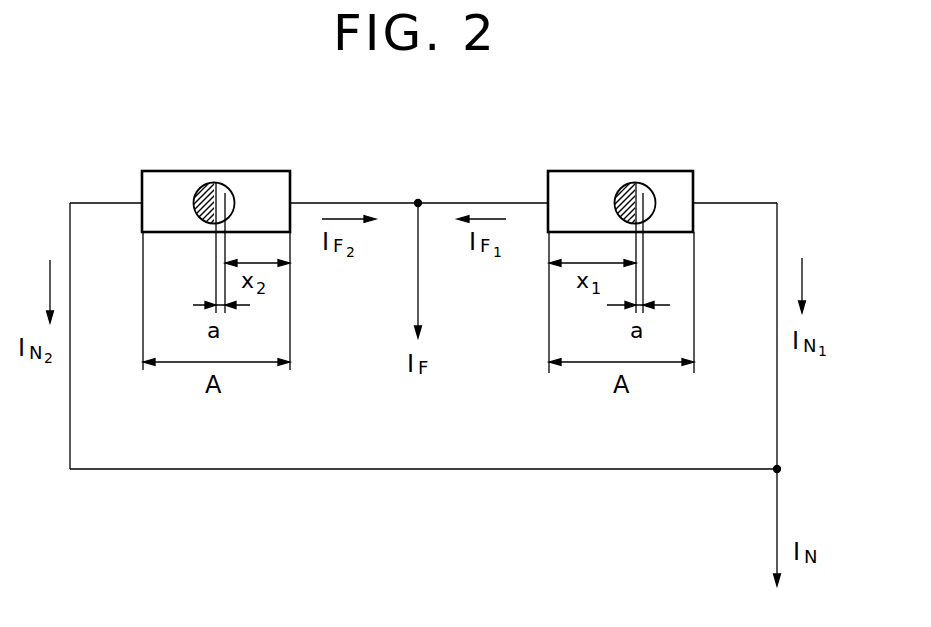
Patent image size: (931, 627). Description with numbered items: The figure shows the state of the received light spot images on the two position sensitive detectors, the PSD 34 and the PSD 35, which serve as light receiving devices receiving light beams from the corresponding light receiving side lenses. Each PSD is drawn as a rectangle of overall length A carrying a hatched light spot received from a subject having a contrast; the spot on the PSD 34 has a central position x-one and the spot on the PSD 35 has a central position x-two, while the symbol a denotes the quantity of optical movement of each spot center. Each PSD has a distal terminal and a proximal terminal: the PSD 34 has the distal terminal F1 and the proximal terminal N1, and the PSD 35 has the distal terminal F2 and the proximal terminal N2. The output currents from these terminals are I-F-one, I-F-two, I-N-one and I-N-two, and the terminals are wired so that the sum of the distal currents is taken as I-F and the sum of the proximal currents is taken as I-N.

The PSD 34 is at (600, 171).
The PSD 35 is at (193, 171).
The proximal terminal N1 is at (733, 164).
The proximal terminal N2 is at (115, 164).
The distal terminal F1 is at (488, 164).
The distal terminal F2 is at (350, 164).